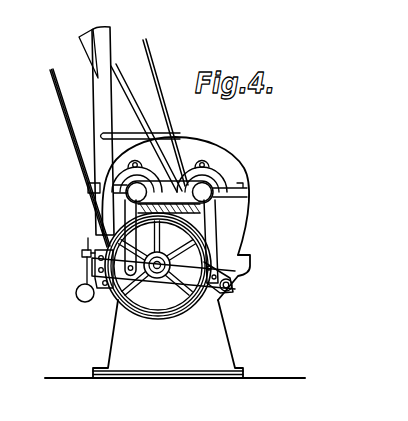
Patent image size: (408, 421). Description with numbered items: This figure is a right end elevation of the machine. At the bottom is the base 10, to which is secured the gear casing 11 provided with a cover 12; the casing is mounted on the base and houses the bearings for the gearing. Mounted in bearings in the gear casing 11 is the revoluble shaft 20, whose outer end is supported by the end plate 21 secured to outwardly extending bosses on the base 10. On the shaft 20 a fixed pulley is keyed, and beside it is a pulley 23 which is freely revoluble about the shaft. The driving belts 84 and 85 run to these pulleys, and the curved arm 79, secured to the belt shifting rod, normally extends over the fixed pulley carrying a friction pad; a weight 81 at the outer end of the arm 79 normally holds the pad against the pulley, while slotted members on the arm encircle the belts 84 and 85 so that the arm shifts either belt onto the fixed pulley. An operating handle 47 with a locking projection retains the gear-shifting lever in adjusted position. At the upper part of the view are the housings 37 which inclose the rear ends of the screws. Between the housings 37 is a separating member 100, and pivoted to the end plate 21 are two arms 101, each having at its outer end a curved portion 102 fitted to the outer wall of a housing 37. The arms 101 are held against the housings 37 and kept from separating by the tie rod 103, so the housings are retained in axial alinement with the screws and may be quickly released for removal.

The base 10 is at (218, 351).
The gear casing 11 is at (232, 237).
The cover 12 is at (231, 164).
The revoluble shaft 20 is at (157, 278).
The end plate 21 is at (188, 273).
The pulley 23 is at (119, 312).
The housing 37 is at (128, 194).
The operating handle 47 is at (160, 129).
The curved arm 79 is at (235, 275).
The weight 81 is at (79, 298).
The driving belt 84 is at (93, 120).
The driving belt 85 is at (165, 111).
The separating member 100 is at (197, 139).
The arm 101 is at (132, 214).
The curved portion 102 is at (127, 191).
The tie rod 103 is at (236, 236).